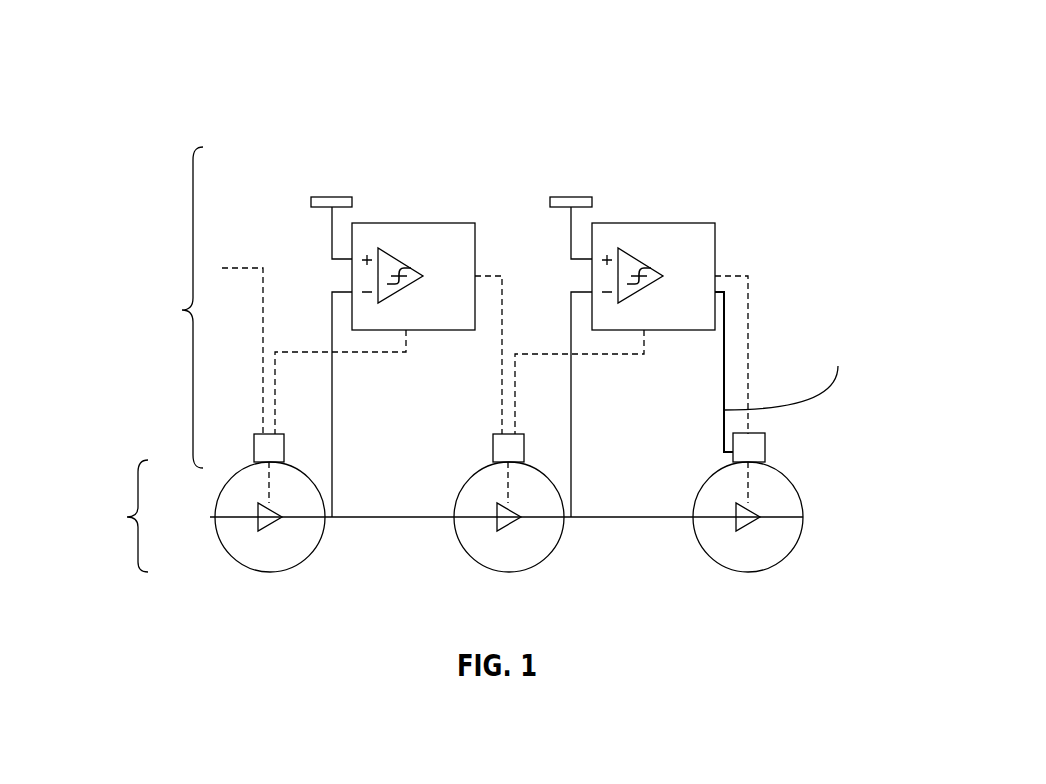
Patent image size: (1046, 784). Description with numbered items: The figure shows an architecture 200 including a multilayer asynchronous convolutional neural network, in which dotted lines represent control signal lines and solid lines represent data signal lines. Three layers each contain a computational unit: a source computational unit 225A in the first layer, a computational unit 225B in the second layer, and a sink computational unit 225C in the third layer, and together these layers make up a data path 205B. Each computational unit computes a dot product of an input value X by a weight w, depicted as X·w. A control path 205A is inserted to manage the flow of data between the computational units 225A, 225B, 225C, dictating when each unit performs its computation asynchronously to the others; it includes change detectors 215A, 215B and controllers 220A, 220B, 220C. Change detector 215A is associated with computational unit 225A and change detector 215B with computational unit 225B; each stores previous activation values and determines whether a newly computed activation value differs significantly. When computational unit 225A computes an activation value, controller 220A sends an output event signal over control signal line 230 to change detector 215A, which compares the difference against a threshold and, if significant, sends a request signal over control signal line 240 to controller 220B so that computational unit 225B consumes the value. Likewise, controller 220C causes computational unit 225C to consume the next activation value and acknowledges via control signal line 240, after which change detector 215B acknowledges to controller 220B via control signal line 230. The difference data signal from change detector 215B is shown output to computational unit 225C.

The architecture 200 is at (845, 57).
The control path 205A is at (117, 287).
The data path 205B is at (92, 540).
The change detector 215A is at (406, 223).
The change detector 215B is at (644, 223).
The controller 220A is at (254, 452).
The controller 220B is at (493, 450).
The controller 220C is at (765, 450).
The computational unit 225A is at (323, 530).
The computational unit 225B is at (562, 530).
The computational unit 225C is at (803, 522).
The control signal line 230 is at (398, 353).
The control signal line 240 is at (502, 331).